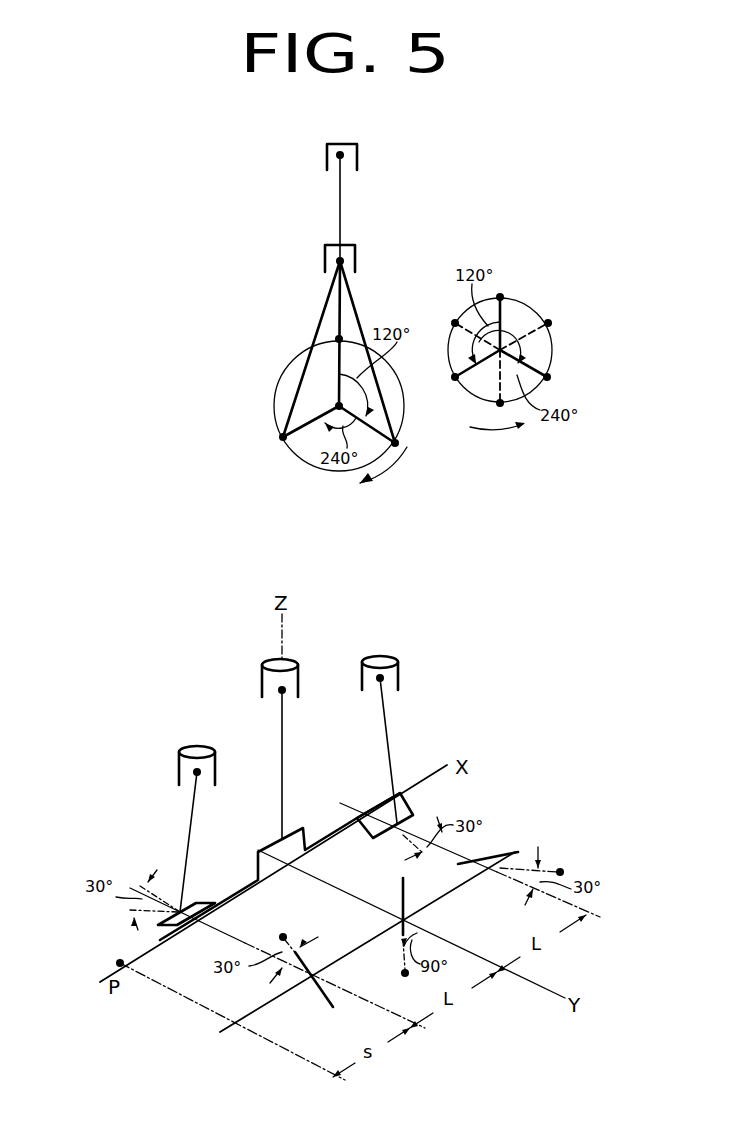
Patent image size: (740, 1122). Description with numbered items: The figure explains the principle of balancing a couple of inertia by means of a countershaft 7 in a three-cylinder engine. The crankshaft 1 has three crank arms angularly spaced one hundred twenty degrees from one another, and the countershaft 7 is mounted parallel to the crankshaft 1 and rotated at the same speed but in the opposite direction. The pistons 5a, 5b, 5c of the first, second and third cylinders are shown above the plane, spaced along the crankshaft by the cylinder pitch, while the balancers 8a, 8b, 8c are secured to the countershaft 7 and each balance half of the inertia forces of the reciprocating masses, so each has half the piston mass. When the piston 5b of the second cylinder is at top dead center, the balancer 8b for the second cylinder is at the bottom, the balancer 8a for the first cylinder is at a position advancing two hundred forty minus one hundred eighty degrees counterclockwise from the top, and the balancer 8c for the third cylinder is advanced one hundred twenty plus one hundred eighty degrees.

The crankshaft 1 is at (336, 406).
The piston of the first cylinder 5a is at (322, 265).
The piston of the second cylinder 5b is at (360, 165).
The piston of the third cylinder 5c is at (399, 680).
The countershaft 7 is at (503, 351).
The balancer for the first cylinder 8a is at (453, 322).
The balancer for the second cylinder 8b is at (497, 404).
The balancer for the third cylinder 8c is at (550, 322).